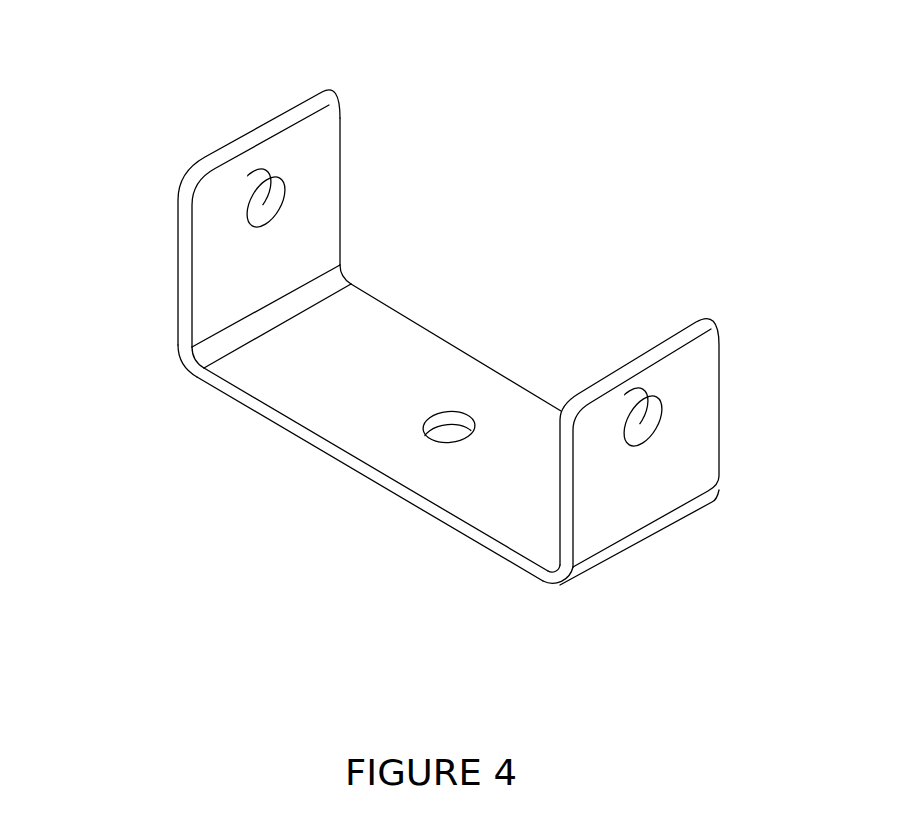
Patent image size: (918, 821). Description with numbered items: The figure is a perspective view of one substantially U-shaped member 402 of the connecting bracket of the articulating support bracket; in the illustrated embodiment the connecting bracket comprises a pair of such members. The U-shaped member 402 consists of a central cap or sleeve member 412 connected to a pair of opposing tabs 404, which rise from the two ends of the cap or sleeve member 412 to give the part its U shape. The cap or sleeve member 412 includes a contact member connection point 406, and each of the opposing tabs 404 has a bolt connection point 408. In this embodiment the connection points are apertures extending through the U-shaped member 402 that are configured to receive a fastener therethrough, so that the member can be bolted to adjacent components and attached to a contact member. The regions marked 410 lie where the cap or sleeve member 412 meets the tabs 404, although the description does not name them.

The U-shaped member 402 is at (422, 305).
The opposing tab 404 is at (178, 277).
The contact member connection point 406 is at (442, 413).
The bolt connection point 408 is at (262, 177).
The bend 410 is at (183, 366).
The cap or sleeve member 412 is at (312, 406).